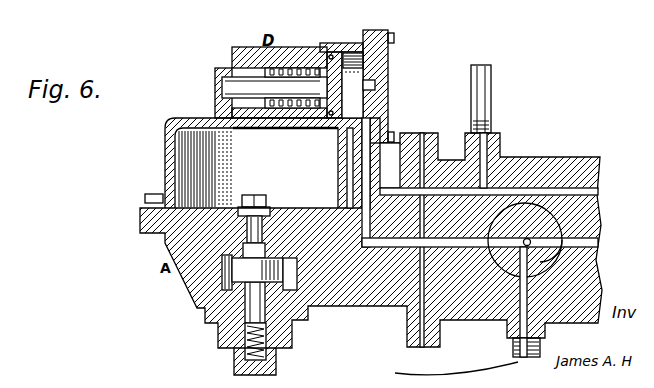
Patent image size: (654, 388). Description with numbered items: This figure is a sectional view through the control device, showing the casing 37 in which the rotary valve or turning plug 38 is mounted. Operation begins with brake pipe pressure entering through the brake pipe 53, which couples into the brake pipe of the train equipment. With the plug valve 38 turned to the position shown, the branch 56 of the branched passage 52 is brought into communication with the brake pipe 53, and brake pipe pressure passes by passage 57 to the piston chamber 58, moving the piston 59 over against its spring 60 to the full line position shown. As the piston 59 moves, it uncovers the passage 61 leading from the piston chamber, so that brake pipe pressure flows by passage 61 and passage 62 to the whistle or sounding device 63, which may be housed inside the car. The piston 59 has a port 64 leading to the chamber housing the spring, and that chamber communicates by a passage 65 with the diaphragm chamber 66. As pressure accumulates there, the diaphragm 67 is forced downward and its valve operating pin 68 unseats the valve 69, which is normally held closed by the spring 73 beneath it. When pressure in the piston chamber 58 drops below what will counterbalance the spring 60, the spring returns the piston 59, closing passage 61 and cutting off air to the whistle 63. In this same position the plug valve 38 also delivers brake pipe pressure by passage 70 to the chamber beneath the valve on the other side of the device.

The casing 37 is at (530, 172).
The rotary valve or turning plug 38 is at (545, 220).
The passage 52 is at (557, 247).
The brake pipe 53 is at (518, 348).
The branch of passage 56 is at (548, 255).
The passage 57 is at (368, 178).
The piston chamber 58 is at (378, 68).
The piston 59 is at (337, 52).
The spring 60 is at (283, 66).
The passage 61 is at (347, 150).
The passage 62 is at (592, 186).
The whistle or sounding device 63 is at (483, 100).
The port 64 is at (355, 97).
The passage 65 is at (293, 123).
The diaphragm chamber 66 is at (193, 157).
The diaphragm 67 is at (225, 207).
The valve operating pin 68 is at (262, 222).
The valve 69 is at (222, 276).
The passage 70 is at (592, 240).
The spring 73 is at (240, 360).